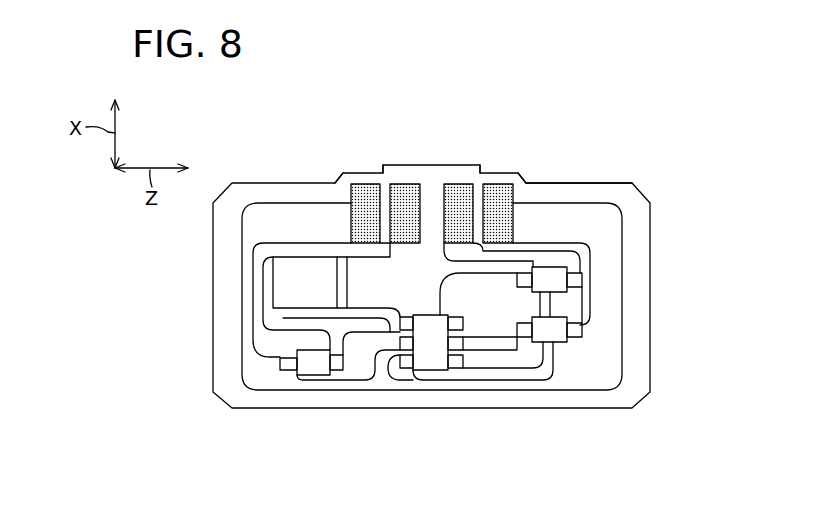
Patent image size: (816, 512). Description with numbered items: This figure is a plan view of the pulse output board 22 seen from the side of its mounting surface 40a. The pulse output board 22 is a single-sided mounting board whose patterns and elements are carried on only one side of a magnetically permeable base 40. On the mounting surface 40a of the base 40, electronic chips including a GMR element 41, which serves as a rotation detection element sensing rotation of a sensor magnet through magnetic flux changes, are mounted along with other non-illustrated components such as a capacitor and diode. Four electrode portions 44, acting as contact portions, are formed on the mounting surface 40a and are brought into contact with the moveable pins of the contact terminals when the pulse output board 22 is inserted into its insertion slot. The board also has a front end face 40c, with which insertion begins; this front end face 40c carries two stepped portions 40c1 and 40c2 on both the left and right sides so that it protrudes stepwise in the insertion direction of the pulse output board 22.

The pulse output board 22 is at (664, 177).
The magnetically permeable base 40 is at (652, 312).
The mounting surface 40a is at (637, 252).
The front end face 40c is at (590, 183).
The first stepped portion 40c1 is at (336, 180).
The second stepped portion 40c2 is at (383, 170).
The GMR element 41 is at (432, 353).
The electrode portions 44 is at (368, 187).